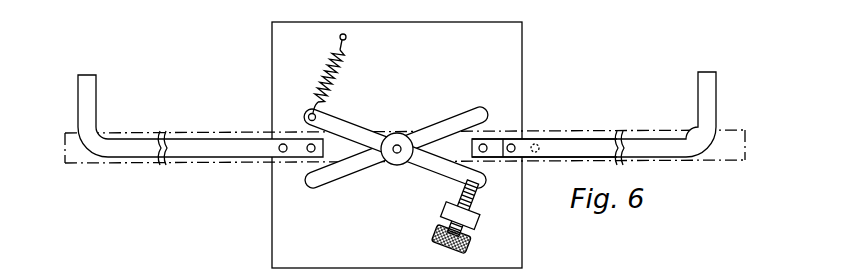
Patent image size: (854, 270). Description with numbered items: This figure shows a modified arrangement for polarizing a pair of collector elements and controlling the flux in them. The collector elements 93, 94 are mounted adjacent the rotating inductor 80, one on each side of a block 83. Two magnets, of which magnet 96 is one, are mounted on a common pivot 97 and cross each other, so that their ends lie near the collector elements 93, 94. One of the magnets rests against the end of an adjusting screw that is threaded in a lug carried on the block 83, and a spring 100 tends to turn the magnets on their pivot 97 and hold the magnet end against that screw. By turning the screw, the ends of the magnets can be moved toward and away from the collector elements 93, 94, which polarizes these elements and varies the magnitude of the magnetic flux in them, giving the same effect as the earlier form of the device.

The rotating inductor 80 is at (582, 128).
The block 83 is at (507, 93).
The collector element 93 is at (650, 138).
The collector element 94 is at (185, 142).
The magnet 96 is at (338, 118).
The pivot 97 is at (398, 145).
The spring 100 is at (318, 82).